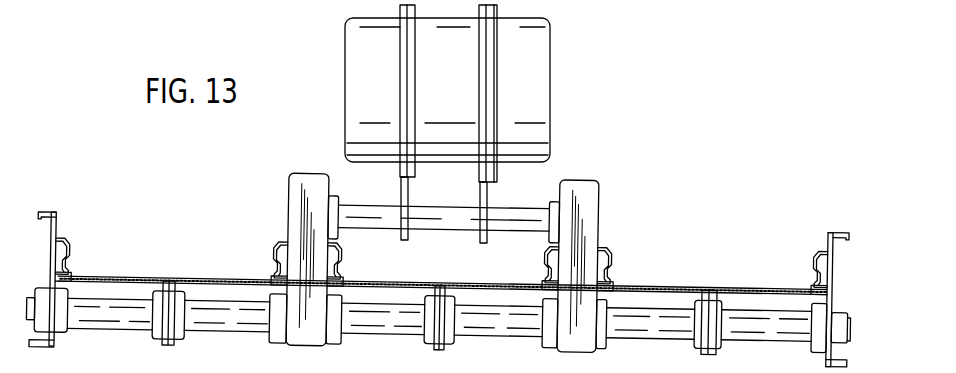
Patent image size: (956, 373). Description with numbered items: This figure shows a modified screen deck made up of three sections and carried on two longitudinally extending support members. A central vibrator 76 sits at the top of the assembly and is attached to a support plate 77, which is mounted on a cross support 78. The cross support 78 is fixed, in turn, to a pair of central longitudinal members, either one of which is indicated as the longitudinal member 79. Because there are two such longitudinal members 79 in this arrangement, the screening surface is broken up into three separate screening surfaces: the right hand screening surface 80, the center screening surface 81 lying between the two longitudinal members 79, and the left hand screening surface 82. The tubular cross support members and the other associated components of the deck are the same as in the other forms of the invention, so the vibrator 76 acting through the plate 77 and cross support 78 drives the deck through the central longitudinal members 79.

The central vibrator 76 is at (560, 76).
The support plate 77 is at (409, 191).
The cross support 78 is at (505, 231).
The central longitudinal member 79 is at (287, 203).
The right hand screening surface 80 is at (668, 283).
The center screening surface 81 is at (464, 279).
The left hand screening surface 82 is at (186, 273).